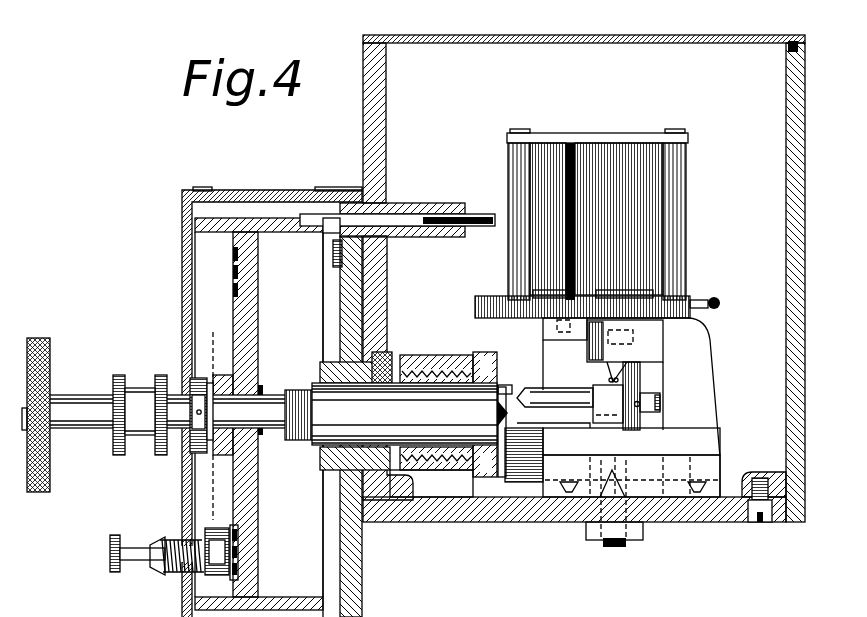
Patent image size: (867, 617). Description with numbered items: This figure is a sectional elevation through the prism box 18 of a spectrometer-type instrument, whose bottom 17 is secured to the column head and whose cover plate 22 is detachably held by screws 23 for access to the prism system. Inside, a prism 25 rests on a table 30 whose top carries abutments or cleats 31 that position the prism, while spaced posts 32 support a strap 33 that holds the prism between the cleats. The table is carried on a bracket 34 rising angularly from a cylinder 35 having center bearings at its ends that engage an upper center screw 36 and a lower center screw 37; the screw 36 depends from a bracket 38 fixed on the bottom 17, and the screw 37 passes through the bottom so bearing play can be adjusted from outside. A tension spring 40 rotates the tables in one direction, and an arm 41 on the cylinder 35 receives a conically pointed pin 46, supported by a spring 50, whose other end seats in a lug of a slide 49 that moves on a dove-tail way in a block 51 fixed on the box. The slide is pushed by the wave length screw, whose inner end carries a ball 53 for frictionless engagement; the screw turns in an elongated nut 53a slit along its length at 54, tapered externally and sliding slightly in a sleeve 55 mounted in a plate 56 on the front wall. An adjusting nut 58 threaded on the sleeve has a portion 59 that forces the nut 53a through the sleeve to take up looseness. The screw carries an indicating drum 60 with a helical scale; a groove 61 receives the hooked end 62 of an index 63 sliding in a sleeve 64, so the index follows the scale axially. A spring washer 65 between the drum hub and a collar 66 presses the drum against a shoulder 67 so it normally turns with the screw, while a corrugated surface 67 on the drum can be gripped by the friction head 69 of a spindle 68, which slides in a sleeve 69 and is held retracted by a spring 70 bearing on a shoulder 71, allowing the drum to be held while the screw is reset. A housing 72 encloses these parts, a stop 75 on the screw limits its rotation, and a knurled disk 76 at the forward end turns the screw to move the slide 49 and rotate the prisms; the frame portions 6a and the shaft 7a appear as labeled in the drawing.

The bottom of the prism box 17 is at (735, 517).
The prism box 18 is at (388, 78).
The cover plate 22 is at (661, 43).
The screws 23 is at (793, 47).
The prism 25 is at (615, 157).
The table 30 is at (484, 295).
The abutments or cleats 31 is at (641, 285).
The posts 32 is at (518, 160).
The strap 33 is at (553, 133).
The bracket 34 is at (546, 355).
The cylinder 35 is at (640, 378).
The upper center screw 36 is at (640, 343).
The lower center screw 37 is at (611, 543).
The bracket 38 is at (693, 348).
The tension spring 40 is at (719, 301).
The arm 41 is at (640, 390).
The conically pointed pin 46 is at (555, 409).
The slide 49 is at (696, 437).
The spring 50 is at (546, 390).
The block 51 is at (556, 473).
The ball 53 is at (468, 409).
The elongated nut 53a is at (318, 415).
The slit 54 is at (340, 432).
The sleeve 55 is at (390, 357).
The plate 56 is at (365, 578).
The adjusting nut 58 is at (447, 360).
The portion of adjusting nut 59 is at (500, 378).
The indicating drum 60 is at (255, 219).
The groove 61 is at (277, 218).
The hooked end 62 is at (303, 230).
The pointer or index 63 is at (398, 213).
The sleeve 64 is at (433, 213).
The spring washer 65 is at (203, 383).
The collar 66 is at (195, 377).
The shoulder and corrugated bearing surface 67 is at (233, 272).
The spindle 68 is at (137, 540).
The friction head and sleeve 69 is at (237, 528).
The spring 70 is at (180, 530).
The shoulder 71 is at (155, 533).
The housing 72 is at (182, 205).
The stop 75 is at (173, 433).
The knurled disk 76 is at (48, 340).
The frame casting 6a is at (392, 305).
The shaft 7a is at (167, 415).